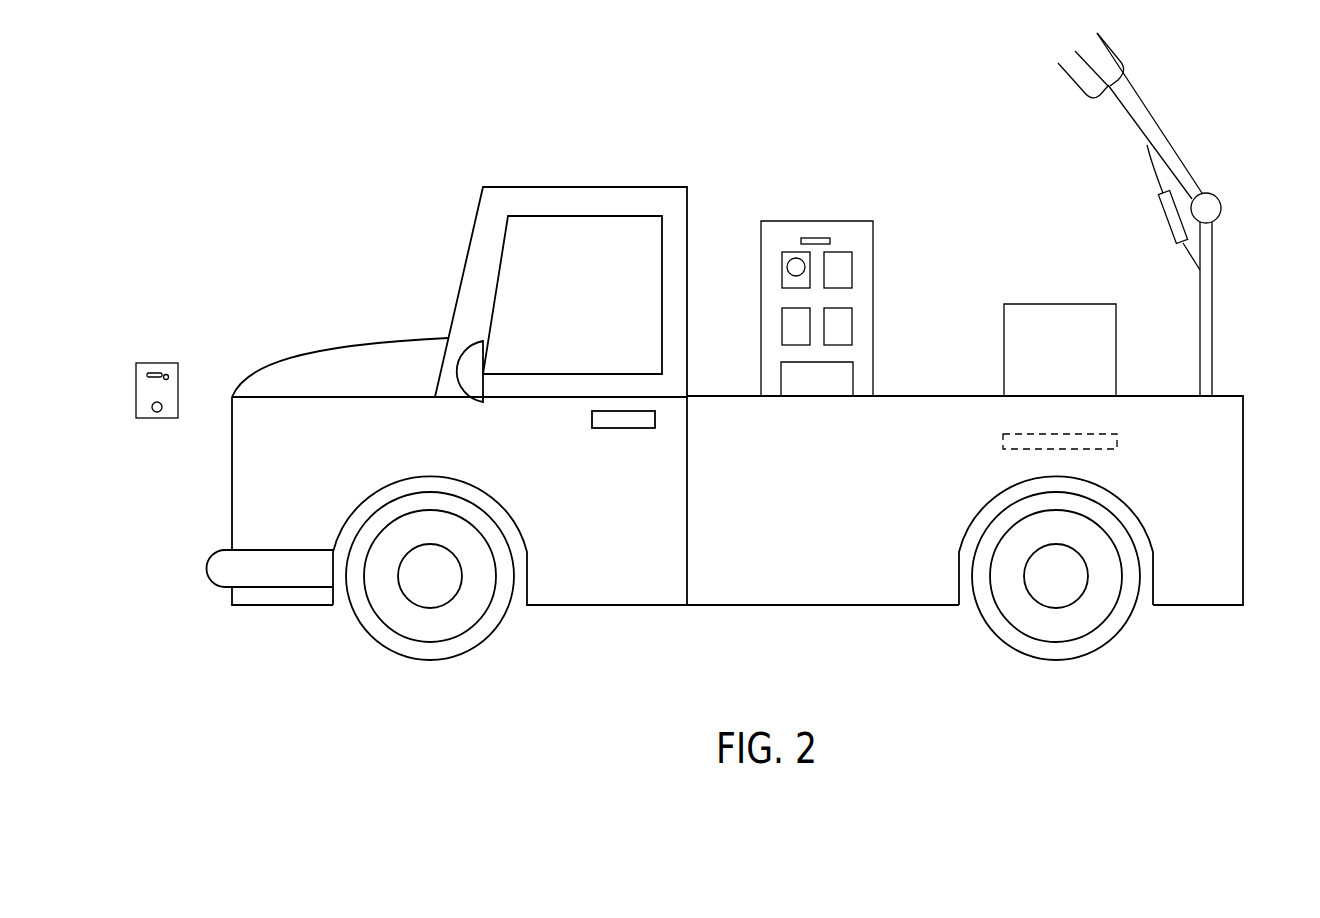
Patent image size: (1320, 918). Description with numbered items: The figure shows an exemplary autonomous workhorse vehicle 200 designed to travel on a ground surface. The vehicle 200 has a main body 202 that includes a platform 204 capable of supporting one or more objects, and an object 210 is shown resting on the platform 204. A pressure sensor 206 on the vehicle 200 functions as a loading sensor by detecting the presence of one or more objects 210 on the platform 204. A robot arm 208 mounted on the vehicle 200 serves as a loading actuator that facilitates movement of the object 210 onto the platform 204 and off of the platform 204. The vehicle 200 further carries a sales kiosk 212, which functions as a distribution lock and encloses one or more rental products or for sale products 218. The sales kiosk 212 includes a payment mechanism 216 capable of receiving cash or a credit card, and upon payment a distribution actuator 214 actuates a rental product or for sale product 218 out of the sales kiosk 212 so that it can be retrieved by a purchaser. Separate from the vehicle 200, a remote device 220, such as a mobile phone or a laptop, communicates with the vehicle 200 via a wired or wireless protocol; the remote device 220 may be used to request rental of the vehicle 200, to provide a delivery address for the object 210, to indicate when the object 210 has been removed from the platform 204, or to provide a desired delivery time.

The autonomous workhorse vehicle 200 is at (374, 246).
The main body 202 is at (632, 611).
The platform 204 is at (804, 586).
The pressure sensor 206 is at (1117, 438).
The robot arm 208 is at (1214, 270).
The object 210 is at (1052, 303).
The sales kiosk 212 is at (873, 274).
The distribution actuator 214 is at (793, 258).
The payment mechanism 216 is at (818, 236).
The rental product or for sale product 218 is at (837, 250).
The remote device 220 is at (158, 363).